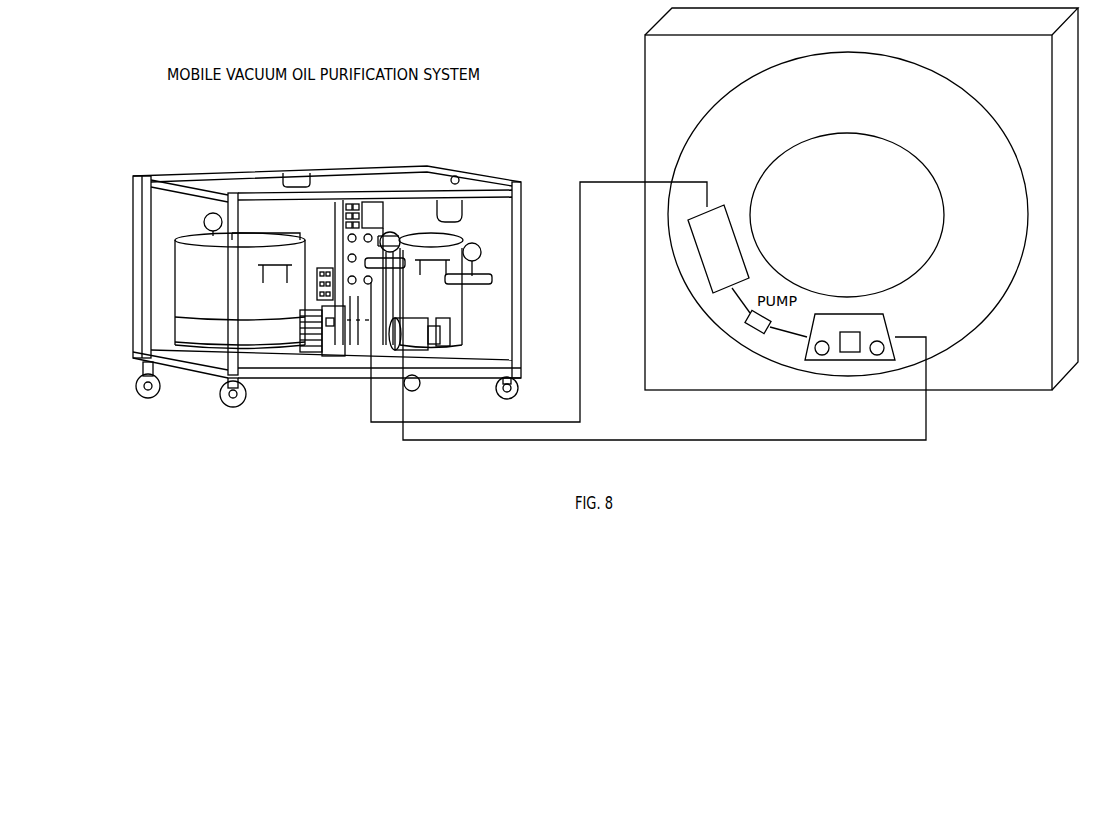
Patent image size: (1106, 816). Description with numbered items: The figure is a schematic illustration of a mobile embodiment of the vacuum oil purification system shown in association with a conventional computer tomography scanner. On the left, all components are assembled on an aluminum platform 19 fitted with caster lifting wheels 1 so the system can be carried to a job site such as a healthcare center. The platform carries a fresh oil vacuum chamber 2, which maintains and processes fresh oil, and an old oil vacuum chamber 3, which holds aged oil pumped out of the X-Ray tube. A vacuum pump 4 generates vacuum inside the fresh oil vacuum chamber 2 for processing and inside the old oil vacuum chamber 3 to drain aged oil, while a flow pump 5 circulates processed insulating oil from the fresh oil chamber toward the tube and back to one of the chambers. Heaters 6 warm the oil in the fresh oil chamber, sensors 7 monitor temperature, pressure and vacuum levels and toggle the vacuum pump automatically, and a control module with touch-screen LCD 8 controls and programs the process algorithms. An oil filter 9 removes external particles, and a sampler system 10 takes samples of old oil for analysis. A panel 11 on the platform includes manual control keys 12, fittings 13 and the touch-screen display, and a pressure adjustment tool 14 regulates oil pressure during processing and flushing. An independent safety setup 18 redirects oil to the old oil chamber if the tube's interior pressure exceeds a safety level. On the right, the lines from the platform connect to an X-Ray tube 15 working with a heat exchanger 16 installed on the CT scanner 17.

The caster lifting wheels 1 is at (133, 215).
The fresh oil vacuum chamber 2 is at (168, 265).
The old oil vacuum chamber 3 is at (445, 235).
The vacuum pump 4 is at (322, 348).
The flow pump 5 is at (448, 330).
The heaters 6 is at (175, 330).
The sensors 7 is at (270, 232).
The control module with touch-screen LCD 8 is at (375, 210).
The oil filter 9 is at (285, 173).
The sampler system 10 is at (457, 177).
The panel 11 is at (338, 352).
The manual control keys 12 is at (357, 325).
The fittings 13 is at (336, 275).
The pressure adjustment tool 14 is at (390, 232).
The X-Ray tube 15 is at (815, 316).
The heat exchanger 16 is at (731, 227).
The CT scanner 17 is at (645, 120).
The independent safety setup 18 is at (483, 258).
The aluminum platform 19 is at (205, 382).